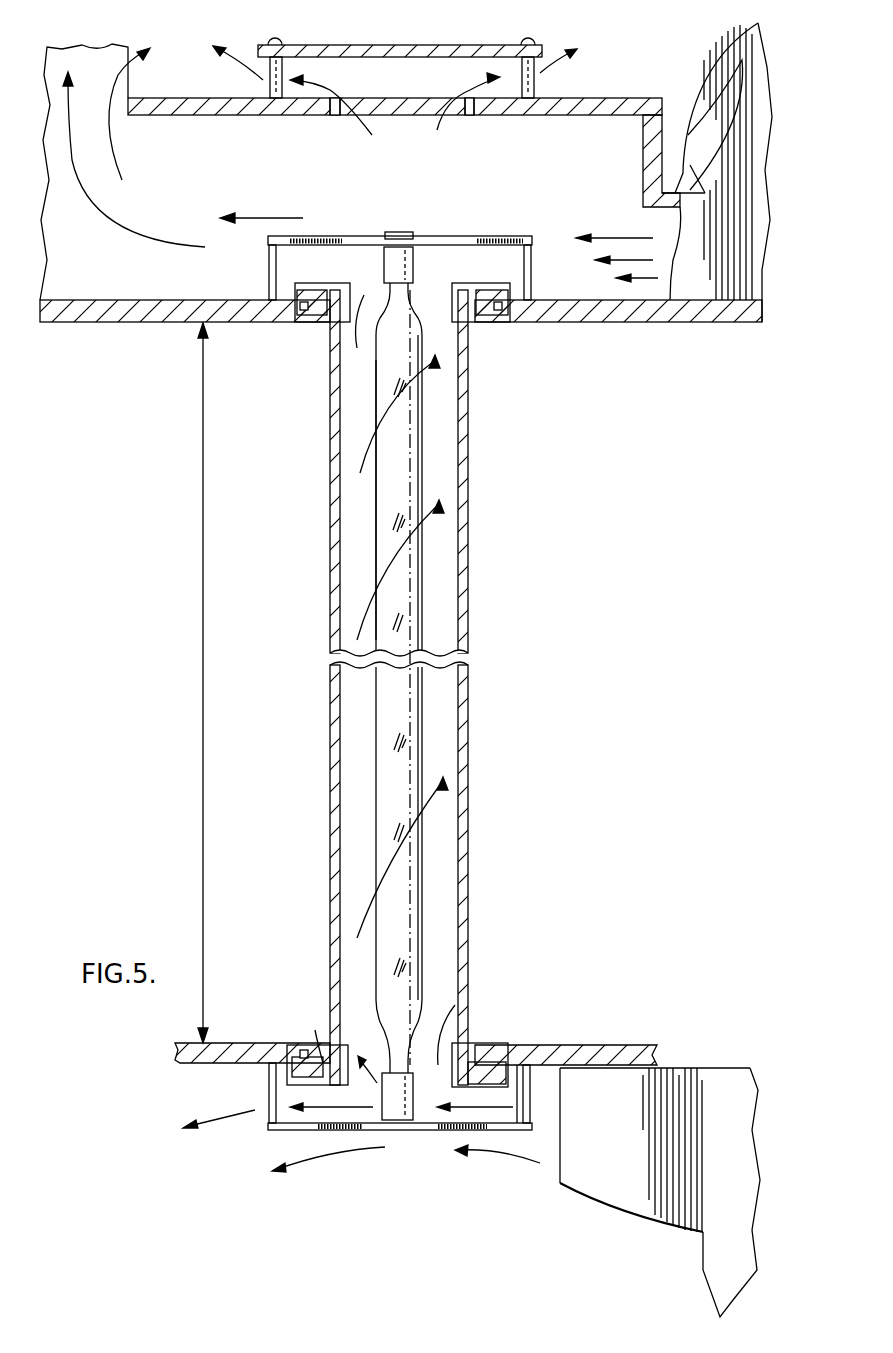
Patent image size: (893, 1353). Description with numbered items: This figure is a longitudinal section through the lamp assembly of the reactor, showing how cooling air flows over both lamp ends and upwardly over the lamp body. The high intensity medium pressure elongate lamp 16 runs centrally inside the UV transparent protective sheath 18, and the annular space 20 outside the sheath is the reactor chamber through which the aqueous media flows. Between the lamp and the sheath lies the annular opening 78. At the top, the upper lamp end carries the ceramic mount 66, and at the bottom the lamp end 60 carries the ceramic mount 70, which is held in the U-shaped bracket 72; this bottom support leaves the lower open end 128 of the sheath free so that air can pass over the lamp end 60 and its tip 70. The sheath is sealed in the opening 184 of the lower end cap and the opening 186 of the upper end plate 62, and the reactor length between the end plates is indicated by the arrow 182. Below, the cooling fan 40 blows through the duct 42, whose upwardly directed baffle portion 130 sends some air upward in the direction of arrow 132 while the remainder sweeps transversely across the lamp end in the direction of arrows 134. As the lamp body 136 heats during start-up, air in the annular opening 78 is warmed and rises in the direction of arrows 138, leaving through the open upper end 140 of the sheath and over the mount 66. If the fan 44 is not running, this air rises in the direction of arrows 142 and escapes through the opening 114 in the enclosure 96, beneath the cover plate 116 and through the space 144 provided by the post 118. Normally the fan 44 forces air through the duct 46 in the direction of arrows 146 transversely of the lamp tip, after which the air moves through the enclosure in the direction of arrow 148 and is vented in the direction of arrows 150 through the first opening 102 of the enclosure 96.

The elongate lamp 16 is at (470, 495).
The protective sheath 18 is at (463, 540).
The annular space 20 is at (567, 652).
The cooling fan 40 is at (718, 1242).
The duct 42 is at (688, 1085).
The fan 44 is at (720, 285).
The duct 46 is at (680, 185).
The lamp end 60 is at (402, 1035).
The end plate 62 is at (583, 313).
The ceramic mount 66 is at (405, 258).
The ceramic mount 70 is at (398, 1120).
The U-shaped bracket 72 is at (347, 1135).
The annular opening 78 is at (447, 735).
The enclosure 96 is at (636, 80).
The first opening 102 is at (130, 98).
The opening 114 is at (460, 118).
The cover plate 116 is at (396, 45).
The post 118 is at (520, 73).
The lower open end 128 is at (447, 1037).
The baffle portion 130 is at (620, 1220).
The arrow 132 is at (510, 1135).
The arrows 134 is at (227, 1113).
The lamp body 136 is at (383, 475).
The arrows 138 is at (400, 428).
The open upper end 140 is at (362, 330).
The arrows 142 is at (437, 124).
The space 144 is at (540, 90).
The arrows 146 is at (620, 232).
The arrow 148 is at (280, 215).
The arrows 150 is at (102, 98).
The arrow 182 is at (200, 674).
The opening 184 is at (325, 1045).
The opening 186 is at (337, 322).